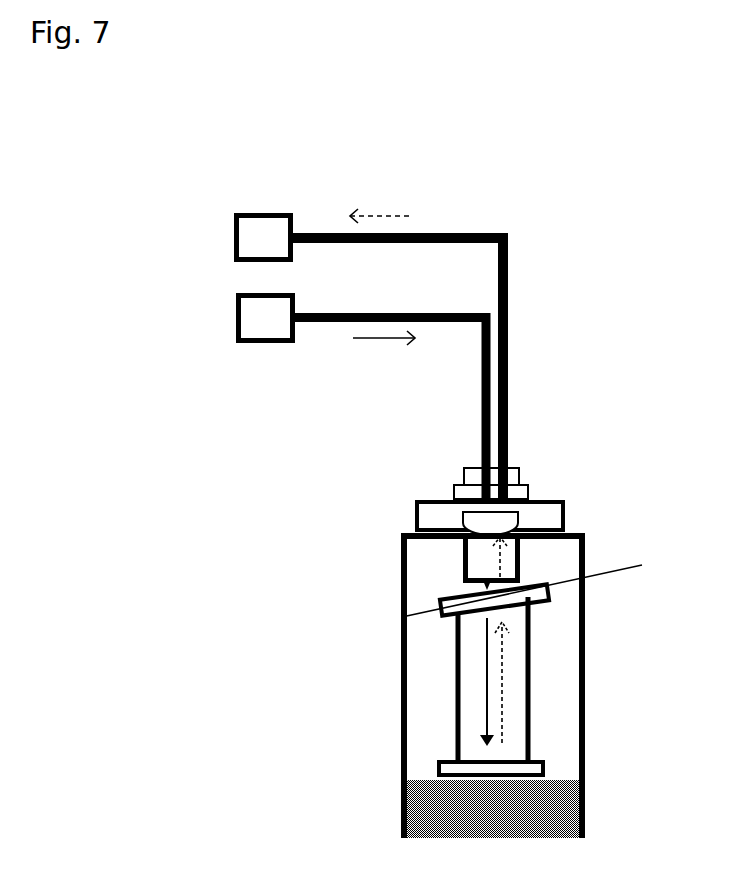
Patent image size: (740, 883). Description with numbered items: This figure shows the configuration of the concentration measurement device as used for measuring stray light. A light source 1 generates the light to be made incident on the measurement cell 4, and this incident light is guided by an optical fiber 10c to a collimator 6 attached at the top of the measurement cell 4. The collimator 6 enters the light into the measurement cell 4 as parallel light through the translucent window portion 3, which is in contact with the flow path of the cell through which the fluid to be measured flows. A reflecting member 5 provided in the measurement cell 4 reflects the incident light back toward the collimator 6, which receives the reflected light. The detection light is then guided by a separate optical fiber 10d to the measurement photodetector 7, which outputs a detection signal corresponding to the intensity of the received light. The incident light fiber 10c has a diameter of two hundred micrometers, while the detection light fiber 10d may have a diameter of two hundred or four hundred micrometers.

The measurement photodetector 7 is at (273, 227).
The light source 1 is at (273, 330).
The optical fiber 10c is at (480, 405).
The optical fiber 10d is at (508, 377).
The collimator 6 is at (500, 517).
The translucent window portion 3 is at (533, 587).
The measurement cell 4 is at (518, 680).
The reflecting member 5 is at (517, 767).